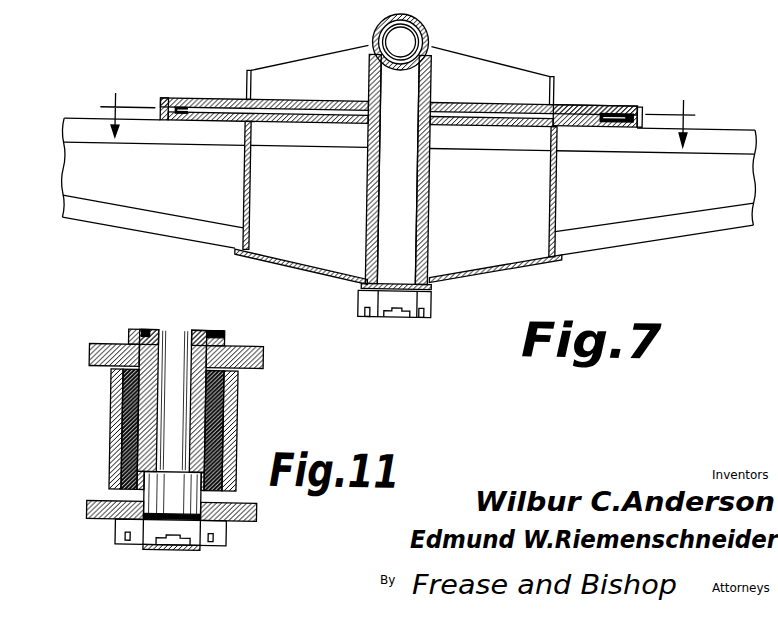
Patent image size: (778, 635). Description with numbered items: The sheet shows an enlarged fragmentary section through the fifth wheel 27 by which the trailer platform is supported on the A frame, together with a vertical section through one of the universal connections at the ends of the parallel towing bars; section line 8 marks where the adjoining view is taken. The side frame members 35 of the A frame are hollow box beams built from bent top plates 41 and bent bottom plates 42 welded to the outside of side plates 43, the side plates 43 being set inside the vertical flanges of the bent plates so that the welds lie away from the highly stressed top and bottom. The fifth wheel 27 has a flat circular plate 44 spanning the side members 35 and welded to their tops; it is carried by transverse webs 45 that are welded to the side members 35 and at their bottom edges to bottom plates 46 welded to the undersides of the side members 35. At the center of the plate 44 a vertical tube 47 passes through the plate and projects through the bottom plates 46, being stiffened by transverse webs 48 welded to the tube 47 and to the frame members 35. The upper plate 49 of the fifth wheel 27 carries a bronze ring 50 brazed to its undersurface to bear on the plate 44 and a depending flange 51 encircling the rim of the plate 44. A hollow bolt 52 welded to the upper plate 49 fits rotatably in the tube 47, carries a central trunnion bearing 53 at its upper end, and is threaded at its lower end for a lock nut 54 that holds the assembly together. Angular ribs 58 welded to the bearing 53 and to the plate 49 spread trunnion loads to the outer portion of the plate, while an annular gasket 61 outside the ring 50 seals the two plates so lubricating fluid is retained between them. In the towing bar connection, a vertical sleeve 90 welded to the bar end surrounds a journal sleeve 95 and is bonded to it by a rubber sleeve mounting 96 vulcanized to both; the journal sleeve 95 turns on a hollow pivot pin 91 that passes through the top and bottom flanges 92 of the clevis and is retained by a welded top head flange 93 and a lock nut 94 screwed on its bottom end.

In FIG. 7, the section line 8- 8 is at (399, 112).
In FIG. 7, the fifth wheel 27 is at (406, 106).
In FIG. 7, the side frame members 35 is at (78, 218).
In FIG. 7, the bent top plate 41 is at (70, 124).
In FIG. 7, the bent bottom plate 42 is at (135, 238).
In FIG. 7, the side plate 43 is at (70, 169).
In FIG. 7, the flat circular plate 44 is at (290, 132).
In FIG. 7, the web 45 is at (245, 193).
In FIG. 7, the bottom plate 46 is at (320, 271).
In FIG. 7, the vertical tube 47 is at (409, 146).
In FIG. 7, the transverse web 48 is at (368, 193).
In FIG. 7, the upper plate 49 is at (273, 102).
In FIG. 7, the bronze ring 50 is at (222, 103).
In FIG. 7, the depending flange 51 is at (643, 106).
In FIG. 7, the hollow bolt 52 is at (408, 182).
In FIG. 7, the central trunnion bearing 53 is at (425, 30).
In FIG. 7, the lock nut 54 is at (432, 303).
In FIG. 7, the angular rib 58 is at (335, 61).
In FIG. 7, the annular gasket 61 is at (630, 103).
In FIG. 11, the vertical sleeve 90 is at (237, 400).
In FIG. 11, the hollow pivot pin 91 is at (148, 330).
In FIG. 11, the clevis flange 92 is at (262, 352).
In FIG. 11, the top head flange 93 is at (220, 330).
In FIG. 11, the lock nut 94 is at (220, 540).
In FIG. 11, the journal sleeve 95 is at (145, 490).
In FIG. 11, the rubber sleeve mounting 96 is at (127, 413).